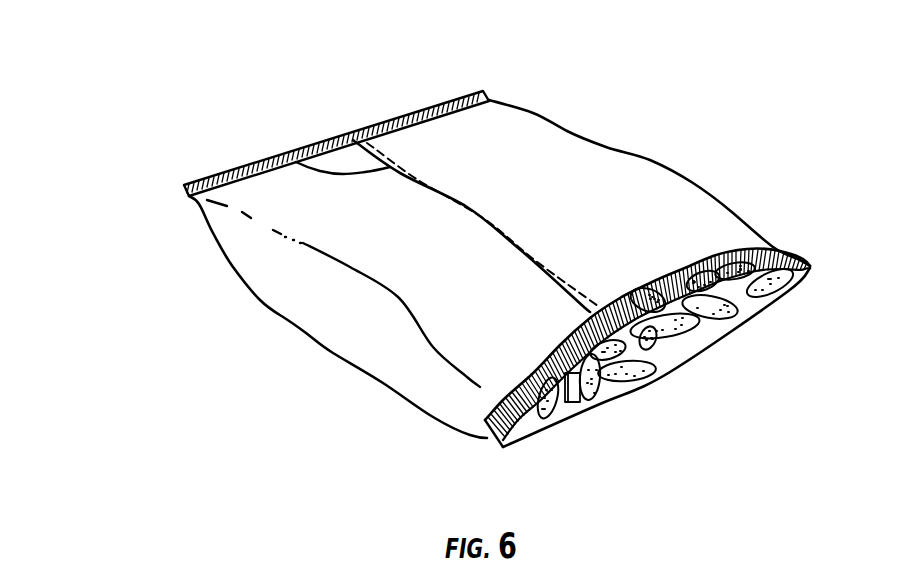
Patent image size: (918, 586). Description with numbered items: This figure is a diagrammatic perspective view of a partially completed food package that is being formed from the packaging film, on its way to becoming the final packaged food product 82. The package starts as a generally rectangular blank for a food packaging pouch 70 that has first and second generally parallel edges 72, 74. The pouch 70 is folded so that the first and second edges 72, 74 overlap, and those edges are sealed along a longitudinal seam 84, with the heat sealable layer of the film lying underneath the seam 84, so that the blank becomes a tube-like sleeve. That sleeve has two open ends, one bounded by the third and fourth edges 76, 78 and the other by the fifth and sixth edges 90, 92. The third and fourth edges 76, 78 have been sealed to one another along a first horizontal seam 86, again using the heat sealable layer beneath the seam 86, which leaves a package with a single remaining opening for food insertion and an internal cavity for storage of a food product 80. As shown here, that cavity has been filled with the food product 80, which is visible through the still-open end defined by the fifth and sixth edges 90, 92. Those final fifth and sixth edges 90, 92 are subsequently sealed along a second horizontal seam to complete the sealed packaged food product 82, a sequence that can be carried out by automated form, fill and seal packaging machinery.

The food packaging pouch 70 is at (325, 293).
The first edge 72 is at (279, 143).
The second edge 74 is at (287, 157).
The third edge 76 is at (297, 108).
The fourth edge 78 is at (343, 168).
The food product 80 is at (683, 317).
The packaged food product 82 is at (605, 110).
The longitudinal seam 84 is at (517, 246).
The first horizontal seam 86 is at (380, 127).
The fifth edge 90 is at (622, 396).
The sixth edge 92 is at (568, 402).